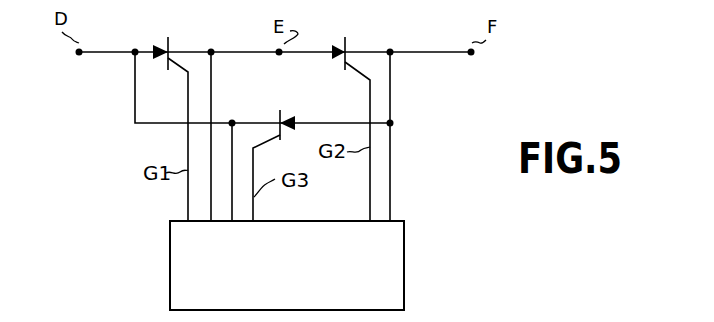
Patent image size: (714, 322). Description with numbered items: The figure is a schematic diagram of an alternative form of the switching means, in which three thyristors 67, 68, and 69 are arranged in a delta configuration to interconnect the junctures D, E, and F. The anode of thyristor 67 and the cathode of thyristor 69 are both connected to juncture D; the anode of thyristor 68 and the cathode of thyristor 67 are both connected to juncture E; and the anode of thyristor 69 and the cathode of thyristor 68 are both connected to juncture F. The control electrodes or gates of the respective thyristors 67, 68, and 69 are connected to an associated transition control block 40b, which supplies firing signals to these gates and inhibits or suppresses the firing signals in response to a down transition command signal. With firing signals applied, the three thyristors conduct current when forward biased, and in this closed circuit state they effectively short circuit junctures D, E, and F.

The thyristor 67 is at (158, 41).
The thyristor 68 is at (338, 33).
The thyristor 69 is at (307, 100).
The transition control block 40b is at (170, 230).